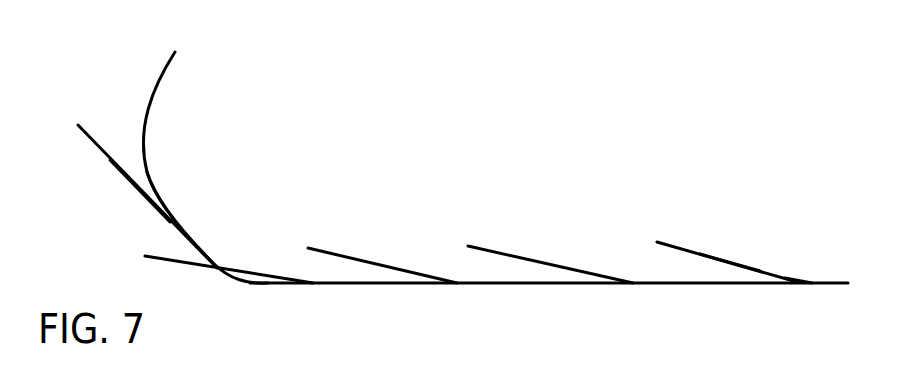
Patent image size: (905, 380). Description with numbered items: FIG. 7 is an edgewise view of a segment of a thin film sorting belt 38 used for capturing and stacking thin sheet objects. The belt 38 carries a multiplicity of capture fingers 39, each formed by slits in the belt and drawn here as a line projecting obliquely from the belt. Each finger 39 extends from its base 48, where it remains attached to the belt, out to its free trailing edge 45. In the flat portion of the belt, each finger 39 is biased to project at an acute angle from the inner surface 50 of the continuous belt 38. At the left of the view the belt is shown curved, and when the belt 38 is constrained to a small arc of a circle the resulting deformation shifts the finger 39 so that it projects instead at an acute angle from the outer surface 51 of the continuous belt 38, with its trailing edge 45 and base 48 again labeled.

The sorting belt 38 is at (166, 77).
The finger 39 is at (115, 167).
The trailing edge 45 is at (102, 80).
The base 48 is at (165, 217).
The inner surface 50 is at (148, 152).
The outer surface 51 is at (702, 284).